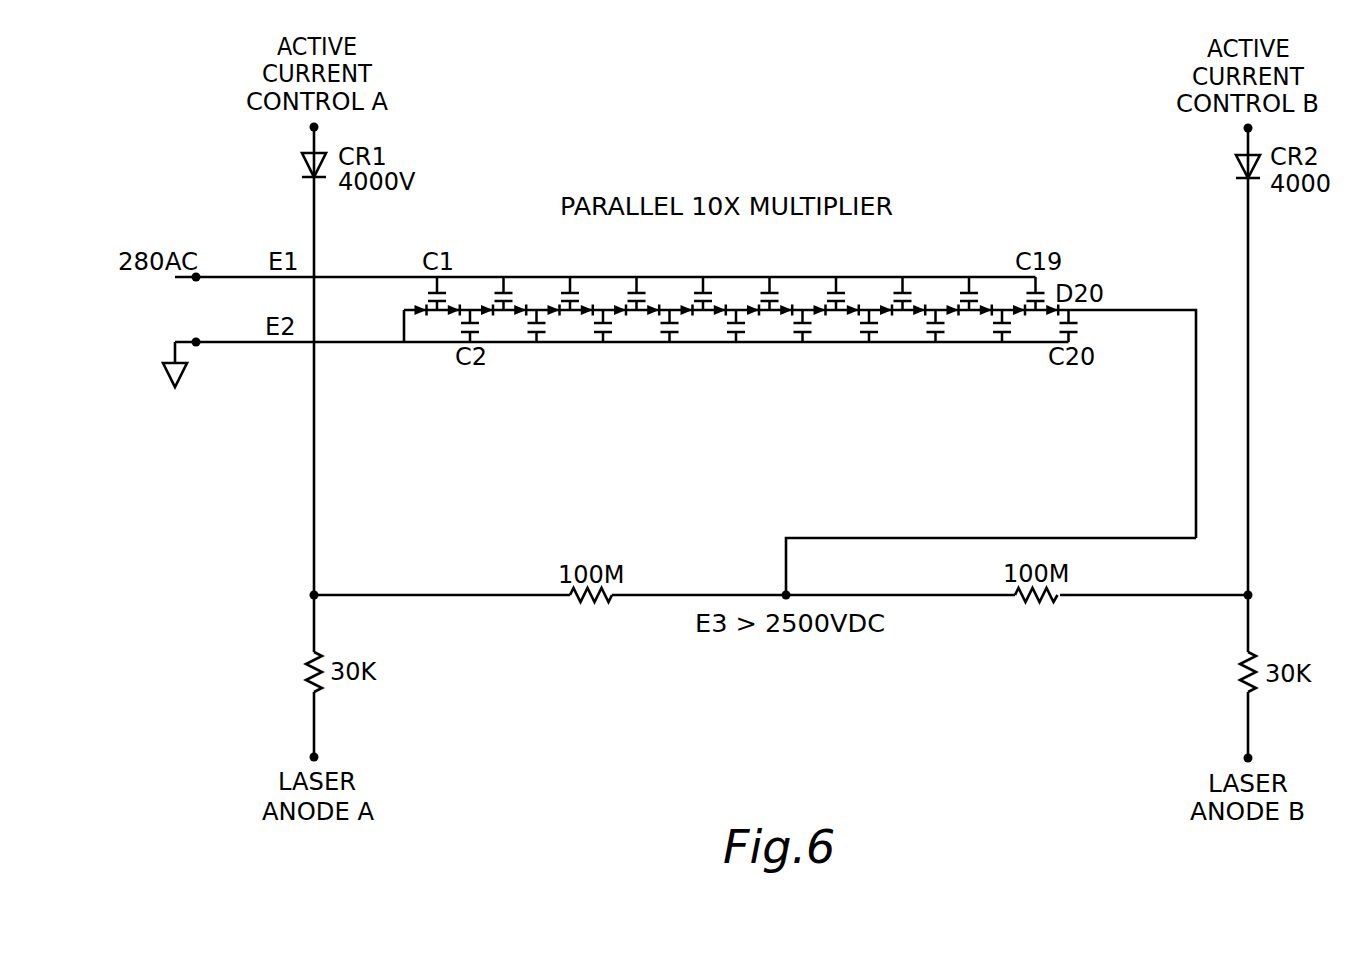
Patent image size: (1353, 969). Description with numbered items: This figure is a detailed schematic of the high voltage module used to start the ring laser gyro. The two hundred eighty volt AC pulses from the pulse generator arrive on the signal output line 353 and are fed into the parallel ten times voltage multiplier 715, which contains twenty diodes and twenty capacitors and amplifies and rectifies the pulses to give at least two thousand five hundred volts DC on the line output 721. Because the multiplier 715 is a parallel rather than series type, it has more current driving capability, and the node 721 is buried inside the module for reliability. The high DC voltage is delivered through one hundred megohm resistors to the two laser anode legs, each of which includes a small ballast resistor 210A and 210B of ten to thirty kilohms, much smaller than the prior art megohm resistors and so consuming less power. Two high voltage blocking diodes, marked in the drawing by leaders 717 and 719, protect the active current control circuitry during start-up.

The active current control diode CR1 717 is at (310, 152).
The active current control diode CR2 719 is at (1243, 146).
The 280 volt peak-to-peak signal output line 353 is at (237, 277).
The parallel ten times voltage multiplier 715 is at (665, 277).
The line output 721 is at (866, 538).
The ballast resistor 210A is at (307, 673).
The ballast resistor 210B is at (1257, 657).